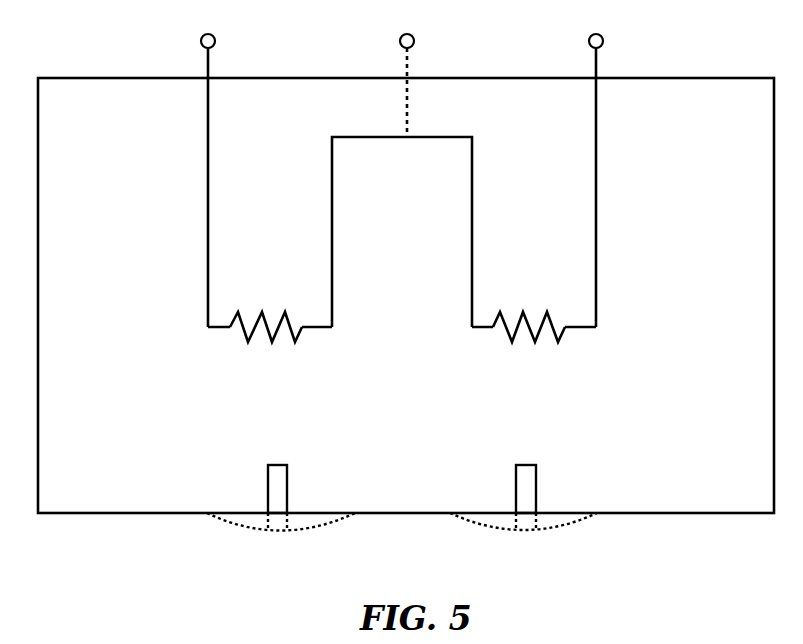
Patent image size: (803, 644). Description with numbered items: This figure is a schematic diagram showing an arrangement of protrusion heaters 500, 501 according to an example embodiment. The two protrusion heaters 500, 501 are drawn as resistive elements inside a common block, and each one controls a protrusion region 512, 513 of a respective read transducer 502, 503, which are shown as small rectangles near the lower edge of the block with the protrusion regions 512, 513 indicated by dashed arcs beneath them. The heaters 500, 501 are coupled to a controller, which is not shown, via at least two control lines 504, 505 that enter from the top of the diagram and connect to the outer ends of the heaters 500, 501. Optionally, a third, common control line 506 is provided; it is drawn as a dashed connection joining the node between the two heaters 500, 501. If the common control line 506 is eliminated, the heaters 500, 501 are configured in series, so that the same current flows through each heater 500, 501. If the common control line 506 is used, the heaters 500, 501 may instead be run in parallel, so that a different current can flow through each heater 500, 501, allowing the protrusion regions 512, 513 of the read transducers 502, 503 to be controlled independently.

The protrusion heater 500 is at (272, 342).
The protrusion heater 501 is at (535, 342).
The read transducer 502 is at (267, 483).
The read transducer 503 is at (515, 483).
The control line 504 is at (200, 37).
The control line 505 is at (589, 39).
The common control line 506 is at (400, 39).
The protrusion region 512 is at (219, 518).
The protrusion region 513 is at (464, 517).